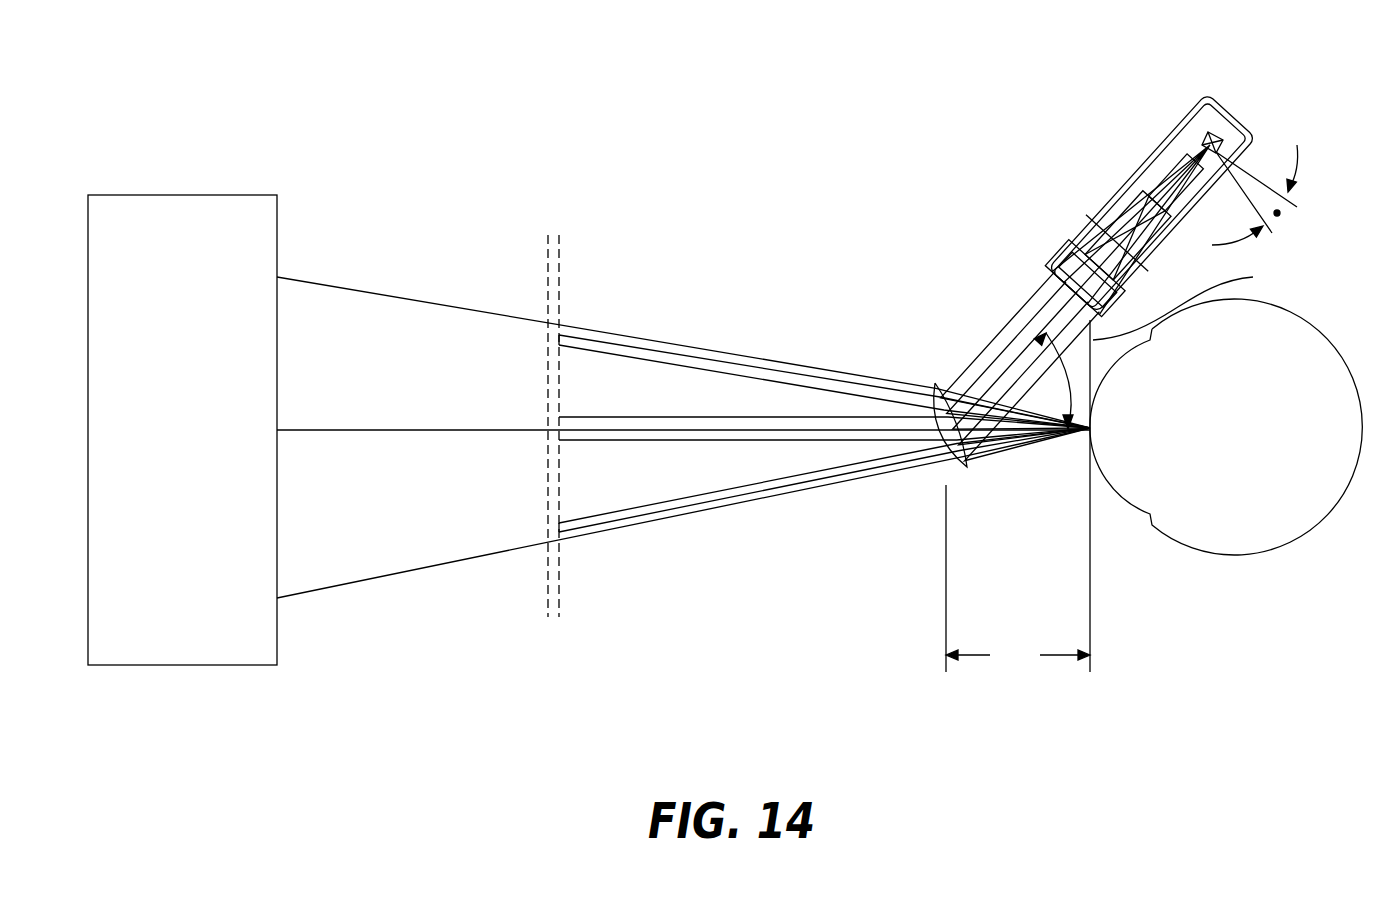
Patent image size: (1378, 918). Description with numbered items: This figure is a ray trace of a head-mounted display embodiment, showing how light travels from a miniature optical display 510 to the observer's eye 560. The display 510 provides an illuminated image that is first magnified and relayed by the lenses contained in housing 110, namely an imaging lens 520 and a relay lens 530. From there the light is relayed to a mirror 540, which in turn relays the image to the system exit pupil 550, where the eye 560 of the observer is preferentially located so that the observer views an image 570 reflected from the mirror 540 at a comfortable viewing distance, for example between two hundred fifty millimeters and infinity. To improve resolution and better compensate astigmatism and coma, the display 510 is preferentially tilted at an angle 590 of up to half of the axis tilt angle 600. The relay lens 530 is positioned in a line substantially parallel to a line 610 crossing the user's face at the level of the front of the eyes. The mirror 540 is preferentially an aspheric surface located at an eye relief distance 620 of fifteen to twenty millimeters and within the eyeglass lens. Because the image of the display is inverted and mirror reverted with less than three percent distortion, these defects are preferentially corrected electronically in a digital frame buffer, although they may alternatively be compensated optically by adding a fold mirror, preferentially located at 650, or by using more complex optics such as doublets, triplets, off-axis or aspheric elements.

The housing 110 is at (1203, 95).
The miniature optical display 510 is at (1222, 133).
The imaging lens 520 is at (1170, 172).
The relay lens 530 is at (1060, 253).
The mirror 540 is at (948, 462).
The system exit pupil 550 is at (1068, 452).
The eye 560 is at (1205, 543).
The image 570 is at (186, 195).
The angle 590 is at (1280, 215).
The axis tilt angle 600 is at (1025, 390).
The line crossing the user's face 610 is at (1253, 277).
The eye relief distance 620 is at (1018, 578).
The fold mirror location 650 is at (1087, 212).